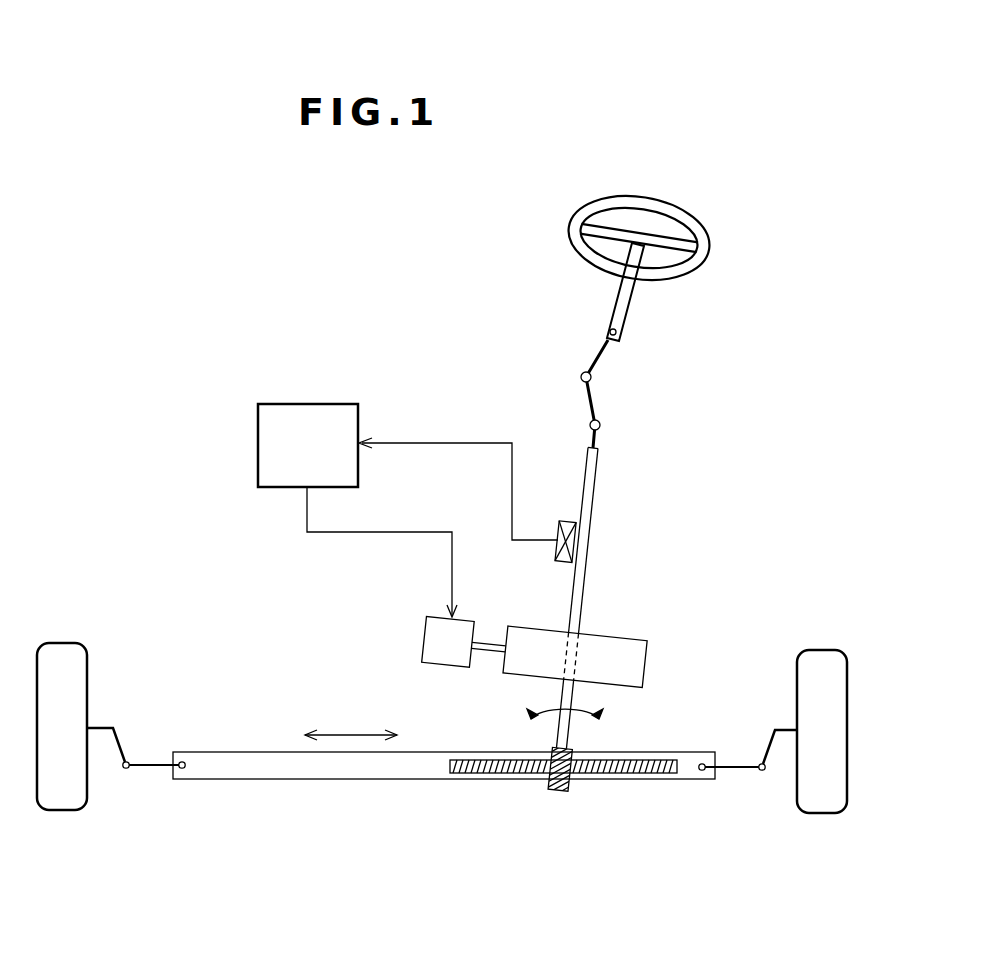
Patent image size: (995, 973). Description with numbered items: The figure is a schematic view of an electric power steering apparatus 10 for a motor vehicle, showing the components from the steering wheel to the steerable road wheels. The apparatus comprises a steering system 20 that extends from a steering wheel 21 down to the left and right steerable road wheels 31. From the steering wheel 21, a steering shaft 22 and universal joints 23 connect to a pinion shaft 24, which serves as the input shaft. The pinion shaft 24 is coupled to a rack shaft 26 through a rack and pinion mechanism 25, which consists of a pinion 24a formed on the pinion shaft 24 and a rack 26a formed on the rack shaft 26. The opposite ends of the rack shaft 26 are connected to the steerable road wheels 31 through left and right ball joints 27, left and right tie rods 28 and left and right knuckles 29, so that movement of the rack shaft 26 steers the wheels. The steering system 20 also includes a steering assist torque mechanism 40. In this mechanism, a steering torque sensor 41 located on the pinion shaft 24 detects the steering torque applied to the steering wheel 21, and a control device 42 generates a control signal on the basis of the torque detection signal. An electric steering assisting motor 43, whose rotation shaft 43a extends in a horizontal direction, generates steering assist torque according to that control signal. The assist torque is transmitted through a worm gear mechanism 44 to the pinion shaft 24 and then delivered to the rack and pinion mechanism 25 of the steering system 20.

The electric power steering apparatus 10 is at (208, 220).
The steering system 20 is at (728, 238).
The steering wheel 21 is at (602, 205).
The steering shaft 22 is at (620, 305).
The universal joints 23 is at (583, 370).
The pinion shaft 24 is at (587, 458).
The pinion 24a is at (555, 790).
The rack and pinion mechanism 25 is at (655, 912).
The rack shaft 26 is at (423, 770).
The rack 26a is at (614, 773).
The ball joints 27 is at (182, 775).
The tie rods 28 is at (143, 768).
The knuckles 29 is at (102, 727).
The steerable road wheels 31 is at (58, 800).
The steering assist torque mechanism 40 is at (222, 462).
The steering torque sensor 41 is at (568, 524).
The control device 42 is at (292, 413).
The electric steering assisting motor 43 is at (435, 641).
The rotation shaft 43a is at (487, 655).
The worm gear mechanism 44 is at (537, 632).